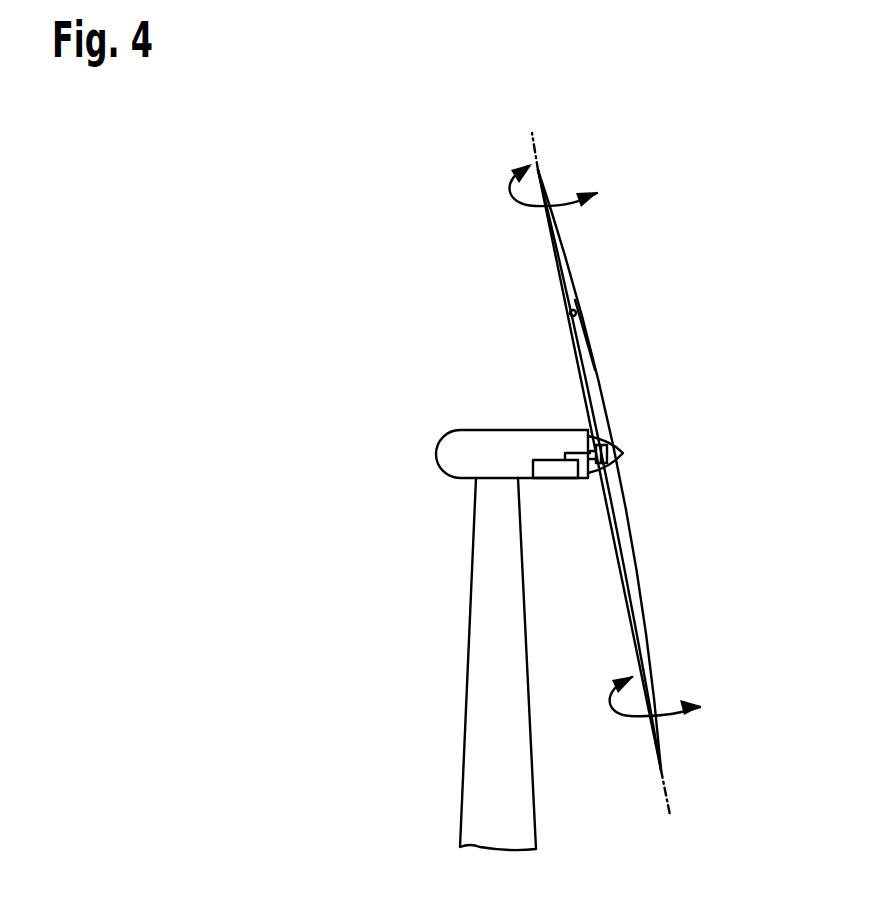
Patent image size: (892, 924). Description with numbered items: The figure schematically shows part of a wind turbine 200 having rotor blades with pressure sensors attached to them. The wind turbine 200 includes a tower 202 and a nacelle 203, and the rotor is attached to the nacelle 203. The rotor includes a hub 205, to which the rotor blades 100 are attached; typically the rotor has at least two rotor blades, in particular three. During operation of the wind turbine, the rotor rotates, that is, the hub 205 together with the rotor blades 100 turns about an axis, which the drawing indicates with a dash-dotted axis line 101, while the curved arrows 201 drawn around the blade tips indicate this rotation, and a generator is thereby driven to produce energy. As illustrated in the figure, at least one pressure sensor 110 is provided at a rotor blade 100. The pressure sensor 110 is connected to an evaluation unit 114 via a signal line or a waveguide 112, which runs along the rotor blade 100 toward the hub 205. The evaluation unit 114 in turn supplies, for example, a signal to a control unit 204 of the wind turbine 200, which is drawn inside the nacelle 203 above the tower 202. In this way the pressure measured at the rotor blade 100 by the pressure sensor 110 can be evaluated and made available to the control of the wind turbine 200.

The wind turbine 200 is at (230, 270).
The direction of rotation 201 is at (510, 198).
The tower 202 is at (480, 693).
The nacelle 203 is at (456, 455).
The control unit 204 is at (558, 470).
The hub 205 is at (624, 453).
The rotor blade 100 is at (653, 470).
The pressure sensor 110 is at (575, 313).
The signal line or waveguide 112 is at (591, 385).
The evaluation unit 114 is at (621, 458).
The blade axis 101 is at (665, 790).